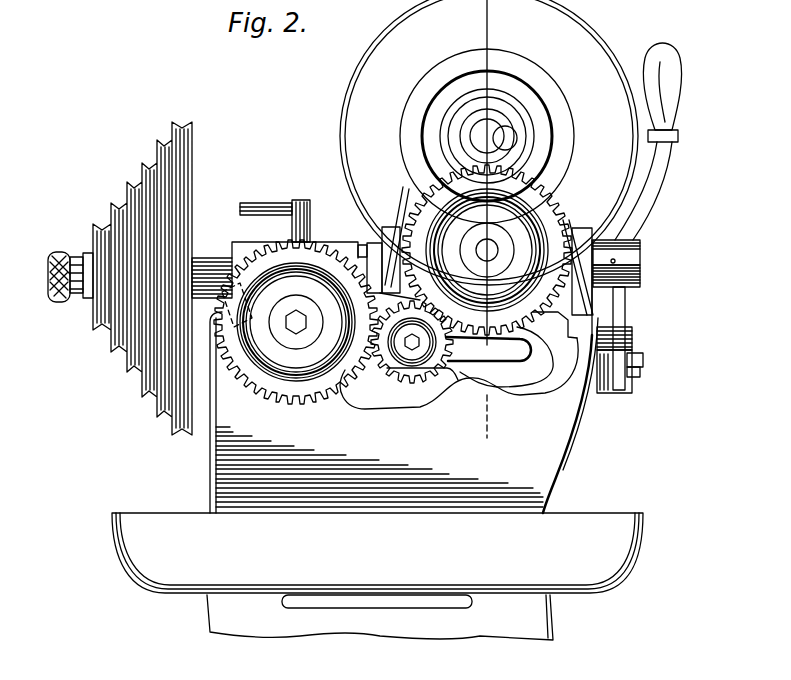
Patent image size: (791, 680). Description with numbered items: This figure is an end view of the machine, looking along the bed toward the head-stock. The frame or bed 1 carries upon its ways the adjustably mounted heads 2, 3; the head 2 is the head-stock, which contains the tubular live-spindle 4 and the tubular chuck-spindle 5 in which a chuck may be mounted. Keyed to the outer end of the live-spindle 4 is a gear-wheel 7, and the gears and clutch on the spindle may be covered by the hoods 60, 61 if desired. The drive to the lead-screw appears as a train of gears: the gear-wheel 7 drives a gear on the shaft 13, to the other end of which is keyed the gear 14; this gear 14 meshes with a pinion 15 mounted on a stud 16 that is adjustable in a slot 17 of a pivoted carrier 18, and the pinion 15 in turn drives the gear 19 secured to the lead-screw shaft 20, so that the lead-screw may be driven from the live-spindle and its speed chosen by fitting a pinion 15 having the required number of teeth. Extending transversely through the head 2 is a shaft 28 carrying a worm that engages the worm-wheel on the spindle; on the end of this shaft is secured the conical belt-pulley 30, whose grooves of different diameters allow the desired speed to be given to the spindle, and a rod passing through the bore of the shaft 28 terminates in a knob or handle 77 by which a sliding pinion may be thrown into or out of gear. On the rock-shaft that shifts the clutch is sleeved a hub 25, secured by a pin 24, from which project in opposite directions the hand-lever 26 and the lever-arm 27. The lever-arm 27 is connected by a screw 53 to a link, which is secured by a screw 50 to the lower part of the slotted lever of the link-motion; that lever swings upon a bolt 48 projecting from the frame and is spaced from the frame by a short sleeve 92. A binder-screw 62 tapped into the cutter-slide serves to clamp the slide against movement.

The frame or bed 1 is at (380, 617).
The head 2 is at (377, 416).
The head 3 is at (487, 432).
The tubular live-spindle 4 is at (519, 153).
The tubular chuck-spindle 5 is at (470, 134).
The gear-wheel 7 is at (543, 124).
The shaft 13 is at (486, 246).
The gear 14 is at (410, 206).
The pinion 15 is at (438, 363).
The stud 16 is at (412, 348).
The slot 17 is at (523, 357).
The pivoted carrier 18 is at (520, 391).
The gear 19 is at (301, 388).
The lead-screw shaft 20 is at (297, 318).
The pin 24 is at (640, 257).
The hub 25 is at (640, 279).
The hand-lever 26 is at (648, 206).
The lever-arm 27 is at (625, 306).
The shaft 28 is at (208, 262).
The conical belt-pulley 30 is at (181, 208).
The pivot bolt 48 is at (632, 334).
The screw 50 is at (633, 373).
The screw 53 is at (645, 359).
The hood 60 is at (548, 100).
The hood 61 is at (489, 172).
The binder-screw 62 is at (295, 210).
The knob or handle 77 is at (63, 254).
The short sleeve 92 is at (617, 330).